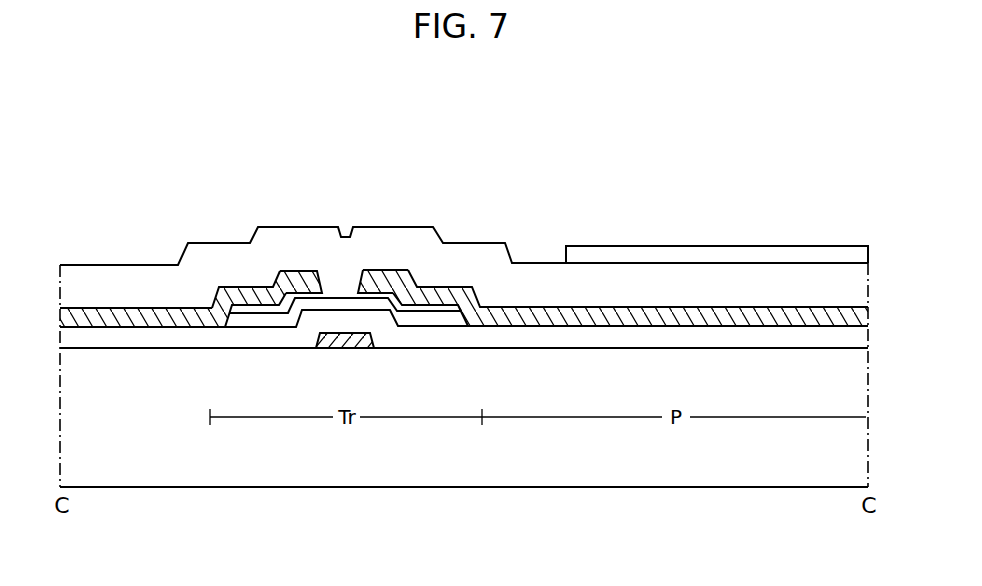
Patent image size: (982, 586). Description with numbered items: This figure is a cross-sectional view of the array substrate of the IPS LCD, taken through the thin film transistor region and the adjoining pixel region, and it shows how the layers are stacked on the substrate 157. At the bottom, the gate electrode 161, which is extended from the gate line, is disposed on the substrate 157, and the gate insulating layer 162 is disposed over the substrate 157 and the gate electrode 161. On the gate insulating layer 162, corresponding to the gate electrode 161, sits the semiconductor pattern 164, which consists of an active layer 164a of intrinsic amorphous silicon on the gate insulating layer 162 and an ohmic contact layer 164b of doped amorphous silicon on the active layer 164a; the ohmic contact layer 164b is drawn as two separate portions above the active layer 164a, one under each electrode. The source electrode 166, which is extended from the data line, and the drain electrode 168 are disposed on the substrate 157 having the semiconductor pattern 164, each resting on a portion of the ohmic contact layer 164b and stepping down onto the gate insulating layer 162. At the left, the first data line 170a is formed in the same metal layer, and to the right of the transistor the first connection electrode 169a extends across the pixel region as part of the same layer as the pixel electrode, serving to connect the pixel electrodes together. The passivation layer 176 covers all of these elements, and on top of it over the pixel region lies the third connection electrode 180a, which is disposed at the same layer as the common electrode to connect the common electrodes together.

The substrate 157 is at (790, 459).
The gate electrode 161 is at (355, 345).
The gate insulating layer 162 is at (567, 350).
The semiconductor pattern 164 is at (317, 142).
The active layer 164a is at (357, 302).
The ohmic contact layer 164b is at (297, 290).
The source electrode 166 is at (233, 292).
The drain electrode 168 is at (448, 292).
The first connection electrode 169a is at (603, 318).
The first data line 170a is at (128, 318).
The passivation layer 176 is at (748, 282).
The third connection electrode 180a is at (680, 258).